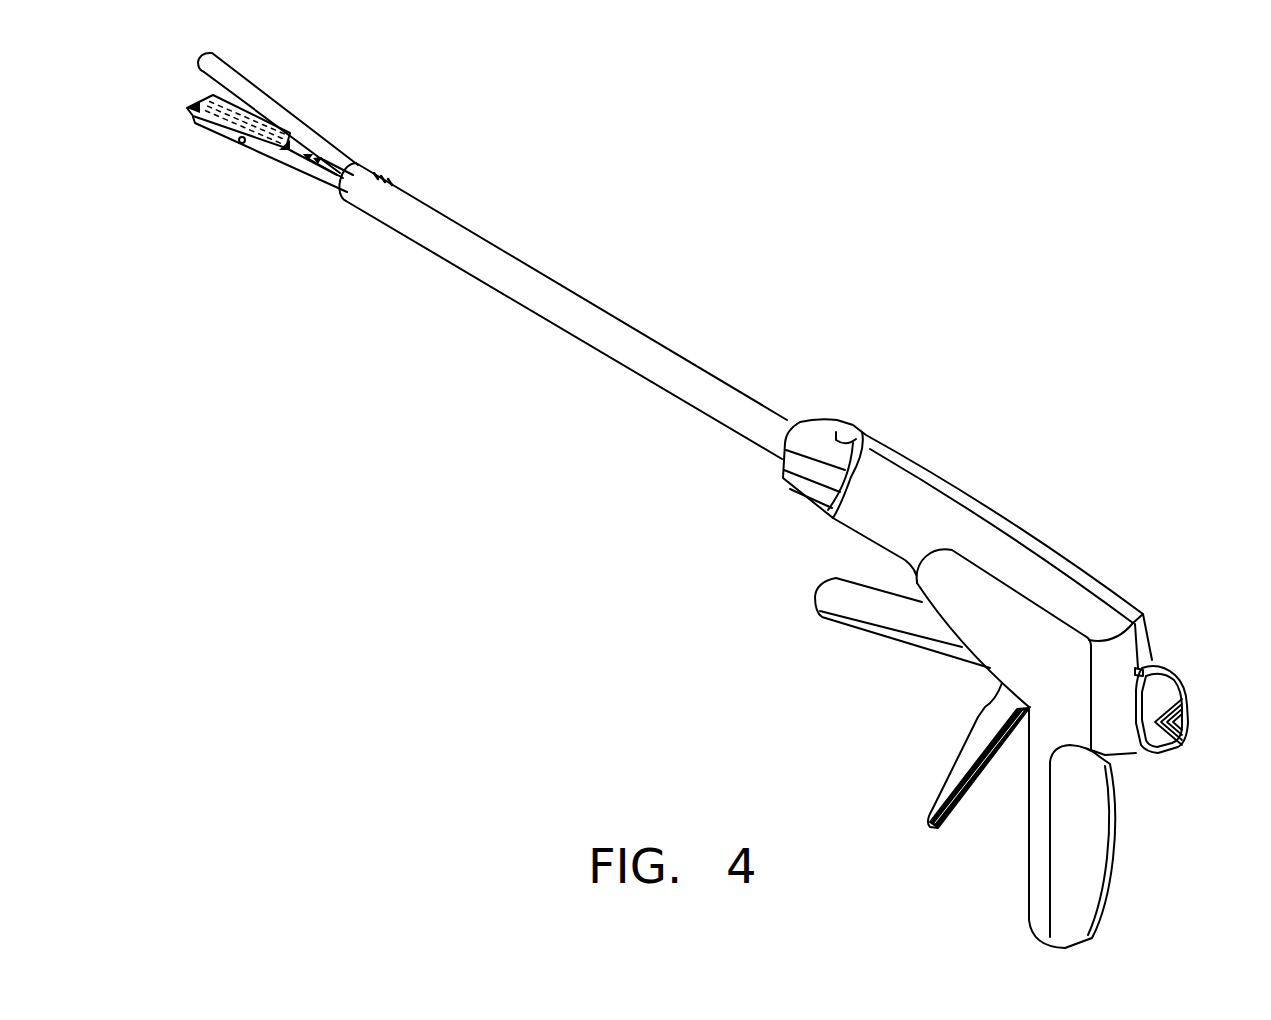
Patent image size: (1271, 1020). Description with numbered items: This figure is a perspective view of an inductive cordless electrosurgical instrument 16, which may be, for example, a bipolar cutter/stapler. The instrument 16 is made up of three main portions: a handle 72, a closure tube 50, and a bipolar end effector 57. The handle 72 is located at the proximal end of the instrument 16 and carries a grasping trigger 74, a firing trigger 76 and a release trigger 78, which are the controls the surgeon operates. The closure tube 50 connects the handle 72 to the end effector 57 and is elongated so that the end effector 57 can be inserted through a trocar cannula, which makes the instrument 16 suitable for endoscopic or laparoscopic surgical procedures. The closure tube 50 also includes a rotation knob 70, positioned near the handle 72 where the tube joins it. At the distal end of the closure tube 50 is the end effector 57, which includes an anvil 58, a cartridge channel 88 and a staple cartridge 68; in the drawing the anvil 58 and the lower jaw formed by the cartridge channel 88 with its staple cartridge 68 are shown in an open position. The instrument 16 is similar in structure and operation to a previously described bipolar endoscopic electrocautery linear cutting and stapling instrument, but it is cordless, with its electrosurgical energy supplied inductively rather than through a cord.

The inductive cordless electrosurgical instrument 16 is at (753, 537).
The closure tube 50 is at (565, 298).
The bipolar end effector 57 is at (362, 118).
The anvil 58 is at (260, 102).
The staple cartridge 68 is at (212, 95).
The rotation knob 70 is at (836, 428).
The handle 72 is at (957, 487).
The grasping trigger 74 is at (940, 778).
The firing trigger 76 is at (900, 648).
The release trigger 78 is at (1162, 691).
The cartridge channel 88 is at (240, 143).